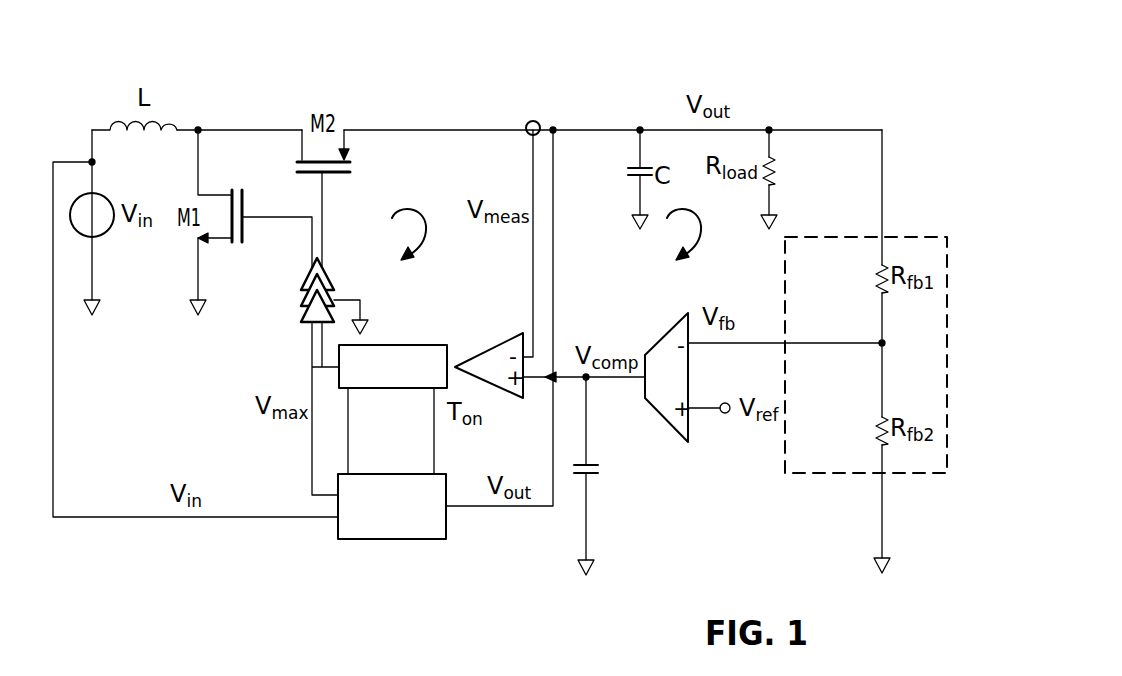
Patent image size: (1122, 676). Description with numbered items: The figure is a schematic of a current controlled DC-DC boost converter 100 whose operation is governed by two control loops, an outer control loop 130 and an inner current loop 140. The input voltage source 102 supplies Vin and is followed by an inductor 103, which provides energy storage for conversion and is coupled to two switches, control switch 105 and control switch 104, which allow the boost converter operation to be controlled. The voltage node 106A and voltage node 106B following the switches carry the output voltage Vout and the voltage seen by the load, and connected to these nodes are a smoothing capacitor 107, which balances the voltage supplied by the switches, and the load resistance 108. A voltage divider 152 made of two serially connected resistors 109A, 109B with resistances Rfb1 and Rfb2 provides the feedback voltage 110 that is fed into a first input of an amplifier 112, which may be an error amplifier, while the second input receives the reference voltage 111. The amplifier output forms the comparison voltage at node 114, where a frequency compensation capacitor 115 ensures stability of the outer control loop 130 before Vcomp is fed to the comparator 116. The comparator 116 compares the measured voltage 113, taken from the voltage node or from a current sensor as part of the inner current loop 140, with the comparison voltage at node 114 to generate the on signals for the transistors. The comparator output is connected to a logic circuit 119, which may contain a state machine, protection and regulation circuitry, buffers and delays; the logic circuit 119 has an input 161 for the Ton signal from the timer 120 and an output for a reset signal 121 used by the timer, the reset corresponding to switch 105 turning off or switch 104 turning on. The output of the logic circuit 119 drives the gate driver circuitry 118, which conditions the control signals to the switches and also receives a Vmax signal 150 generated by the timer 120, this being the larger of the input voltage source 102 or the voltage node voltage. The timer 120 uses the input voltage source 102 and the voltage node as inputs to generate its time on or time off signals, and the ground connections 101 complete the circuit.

The current controlled DC-DC boost converter 100 is at (326, 58).
The ground 101 is at (88, 320).
The input voltage source 102 is at (104, 194).
The inductor 103 is at (116, 118).
The control switch 104 is at (352, 175).
The control switch 105 is at (244, 205).
The voltage node 106A is at (539, 120).
The voltage node 106B is at (746, 127).
The smoothing capacitor 107 is at (627, 171).
The load resistance 108 is at (776, 170).
The resistor 109A is at (876, 276).
The resistor 109B is at (876, 434).
The feedback voltage 110 is at (742, 342).
The reference voltage 111 is at (705, 407).
The amplifier 112 is at (662, 338).
The measured voltage 113 is at (532, 178).
The comparison voltage node 114 is at (606, 379).
The frequency compensation capacitor 115 is at (599, 470).
The comparator 116 is at (488, 345).
The gate driver circuitry 118 is at (290, 303).
The logic circuit 119 is at (393, 344).
The timer 120 is at (393, 541).
The reset signal 121 is at (349, 446).
The outer control loop 130 is at (703, 246).
The inner current loop 140 is at (428, 246).
The Vmax signal 150 is at (311, 441).
The voltage divider 152 is at (918, 228).
The time on input 161 is at (435, 446).